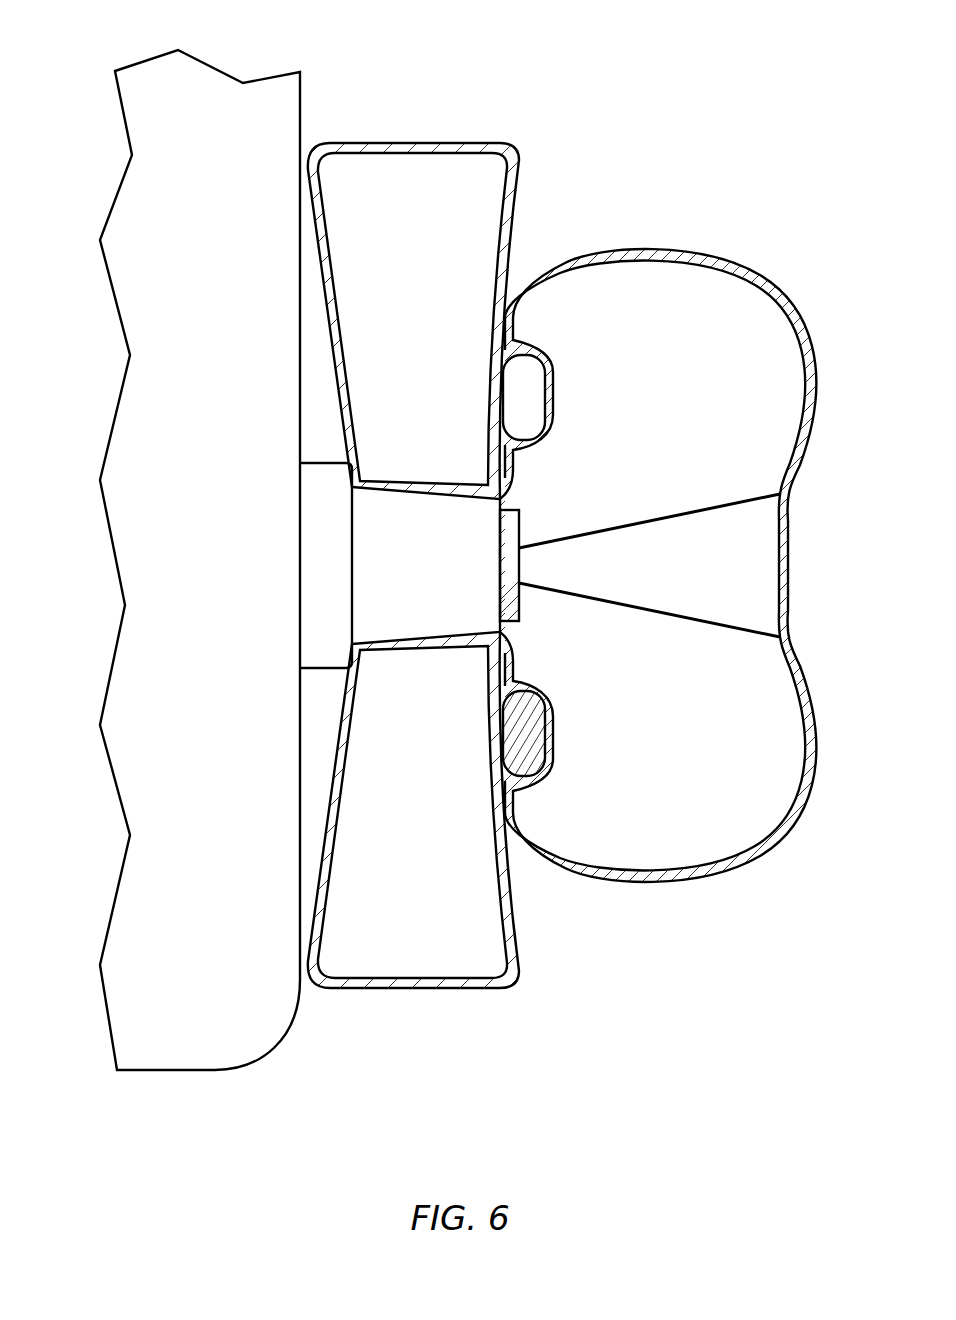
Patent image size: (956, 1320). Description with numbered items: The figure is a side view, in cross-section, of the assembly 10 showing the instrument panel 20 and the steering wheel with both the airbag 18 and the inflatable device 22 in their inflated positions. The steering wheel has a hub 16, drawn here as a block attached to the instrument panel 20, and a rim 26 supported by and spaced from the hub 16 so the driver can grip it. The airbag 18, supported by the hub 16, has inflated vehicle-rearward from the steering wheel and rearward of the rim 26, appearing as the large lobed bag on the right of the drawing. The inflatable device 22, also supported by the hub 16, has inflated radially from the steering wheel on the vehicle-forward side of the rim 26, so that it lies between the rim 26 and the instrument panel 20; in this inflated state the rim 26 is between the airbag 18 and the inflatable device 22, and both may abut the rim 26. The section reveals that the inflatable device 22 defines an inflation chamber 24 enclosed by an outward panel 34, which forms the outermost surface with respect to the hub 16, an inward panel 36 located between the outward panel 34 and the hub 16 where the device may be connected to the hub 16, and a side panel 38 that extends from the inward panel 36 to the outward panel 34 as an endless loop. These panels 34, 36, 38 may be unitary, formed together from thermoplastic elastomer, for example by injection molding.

The assembly 10 is at (638, 127).
The hub 16 is at (408, 542).
The airbag 18 is at (742, 260).
The instrument panel 20 is at (182, 192).
The inflatable device 22 is at (397, 137).
The inflation chamber 24 is at (382, 187).
The rim 26 is at (527, 402).
The outward panel 34 is at (452, 143).
The inward panel 36 is at (433, 478).
The side panel 38 is at (323, 272).